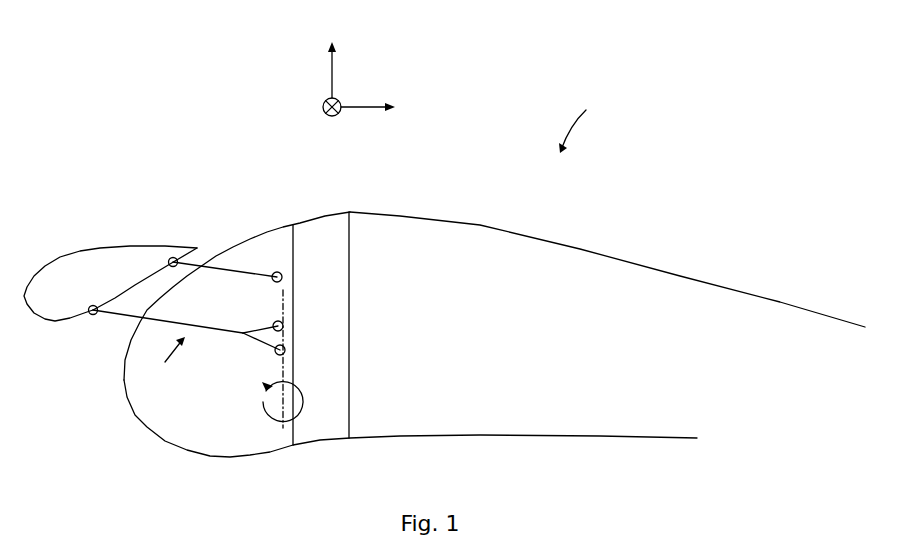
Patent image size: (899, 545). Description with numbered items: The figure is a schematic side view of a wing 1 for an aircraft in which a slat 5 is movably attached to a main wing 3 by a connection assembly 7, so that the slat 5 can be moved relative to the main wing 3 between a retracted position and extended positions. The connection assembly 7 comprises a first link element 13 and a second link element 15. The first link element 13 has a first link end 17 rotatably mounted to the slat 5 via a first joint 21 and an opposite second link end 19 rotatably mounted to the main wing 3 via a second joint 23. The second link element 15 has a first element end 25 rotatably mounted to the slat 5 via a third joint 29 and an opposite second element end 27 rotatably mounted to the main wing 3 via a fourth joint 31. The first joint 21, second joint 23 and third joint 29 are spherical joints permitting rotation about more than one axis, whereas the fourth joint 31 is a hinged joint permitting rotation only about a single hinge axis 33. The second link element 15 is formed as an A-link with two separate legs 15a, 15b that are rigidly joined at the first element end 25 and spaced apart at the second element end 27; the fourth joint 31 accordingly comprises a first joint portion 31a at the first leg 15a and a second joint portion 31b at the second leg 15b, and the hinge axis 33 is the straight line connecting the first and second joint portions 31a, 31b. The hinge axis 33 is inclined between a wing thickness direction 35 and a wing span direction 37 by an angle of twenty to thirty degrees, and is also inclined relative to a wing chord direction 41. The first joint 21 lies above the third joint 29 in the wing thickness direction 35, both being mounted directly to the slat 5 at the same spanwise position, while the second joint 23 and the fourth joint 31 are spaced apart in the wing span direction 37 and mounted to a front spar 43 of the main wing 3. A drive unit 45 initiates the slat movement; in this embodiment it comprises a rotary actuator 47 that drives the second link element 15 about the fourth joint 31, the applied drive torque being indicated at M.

The wing 1 is at (580, 119).
The main wing 3 is at (521, 348).
The slat 5 is at (52, 299).
The connection assembly 7 is at (169, 364).
The first link element 13 is at (222, 266).
The second link element 15 is at (183, 323).
The first leg 15a is at (275, 324).
The second leg 15b is at (261, 346).
The first link end 17 is at (190, 248).
The second link end 19 is at (277, 272).
The first joint 21 is at (169, 266).
The second joint 23 is at (291, 258).
The first element end 25 is at (105, 320).
The second element end 27 is at (245, 336).
The third joint 29 is at (89, 315).
The fourth joint 31 is at (368, 325).
The first joint portion 31a is at (284, 325).
The second joint portion 31b is at (285, 351).
The hinge axis 33 is at (285, 385).
The wing thickness direction 35 is at (333, 57).
The wing span direction 37 is at (320, 120).
The wing chord direction 41 is at (384, 108).
The front spar 43 is at (308, 346).
The drive unit 45 is at (270, 440).
The rotary actuator 47 is at (262, 475).
The drive torque M is at (268, 402).